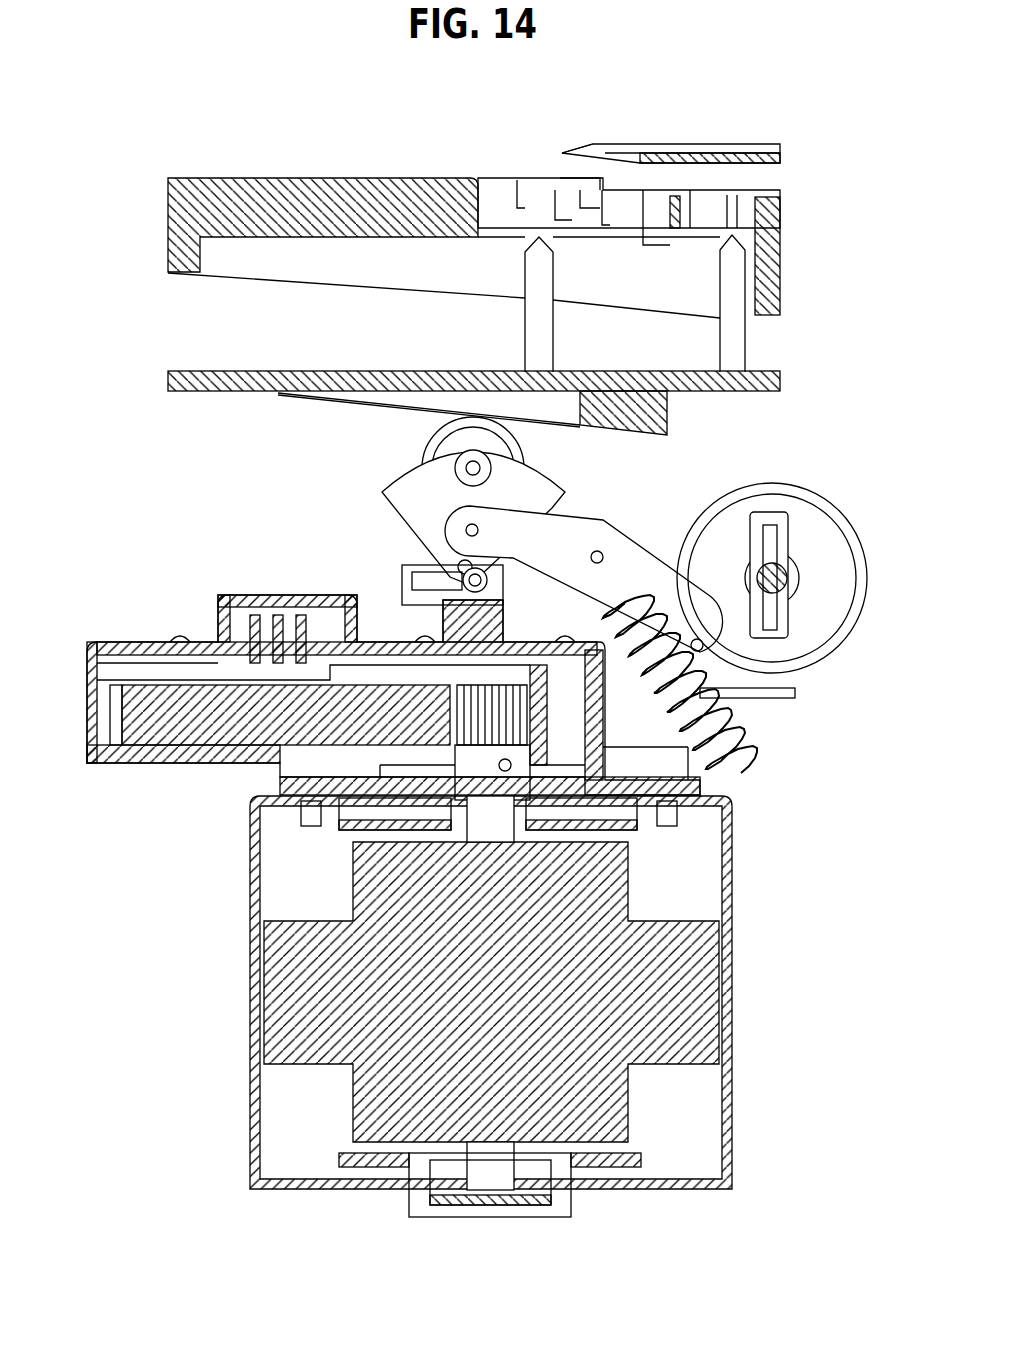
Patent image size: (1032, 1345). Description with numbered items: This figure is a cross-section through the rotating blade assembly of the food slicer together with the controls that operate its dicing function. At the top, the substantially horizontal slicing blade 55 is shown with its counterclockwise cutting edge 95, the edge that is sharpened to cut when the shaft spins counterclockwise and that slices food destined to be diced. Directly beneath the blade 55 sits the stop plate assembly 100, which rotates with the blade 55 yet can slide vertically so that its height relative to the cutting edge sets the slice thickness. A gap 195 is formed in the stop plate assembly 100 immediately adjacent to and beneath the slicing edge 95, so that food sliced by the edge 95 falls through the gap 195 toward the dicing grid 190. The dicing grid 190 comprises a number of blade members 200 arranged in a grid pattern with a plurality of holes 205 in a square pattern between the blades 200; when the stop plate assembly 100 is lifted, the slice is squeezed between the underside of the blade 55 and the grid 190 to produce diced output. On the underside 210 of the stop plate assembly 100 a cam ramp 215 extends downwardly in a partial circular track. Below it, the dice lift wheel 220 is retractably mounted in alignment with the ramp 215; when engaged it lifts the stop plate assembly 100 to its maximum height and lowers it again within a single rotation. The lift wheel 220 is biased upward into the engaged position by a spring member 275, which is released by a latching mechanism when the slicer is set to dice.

The slicing blade 55 is at (693, 153).
The counterclockwise cutting edge 95 is at (617, 142).
The stop plate assembly 100 is at (494, 182).
The dicing grid 190 is at (645, 230).
The gap 195 is at (575, 168).
The blade members 200 is at (517, 200).
The holes 205 is at (582, 210).
The underside 210 is at (204, 399).
The cam ramp 215 is at (668, 412).
The dice lift wheel 220 is at (540, 468).
The spring member 275 is at (763, 752).